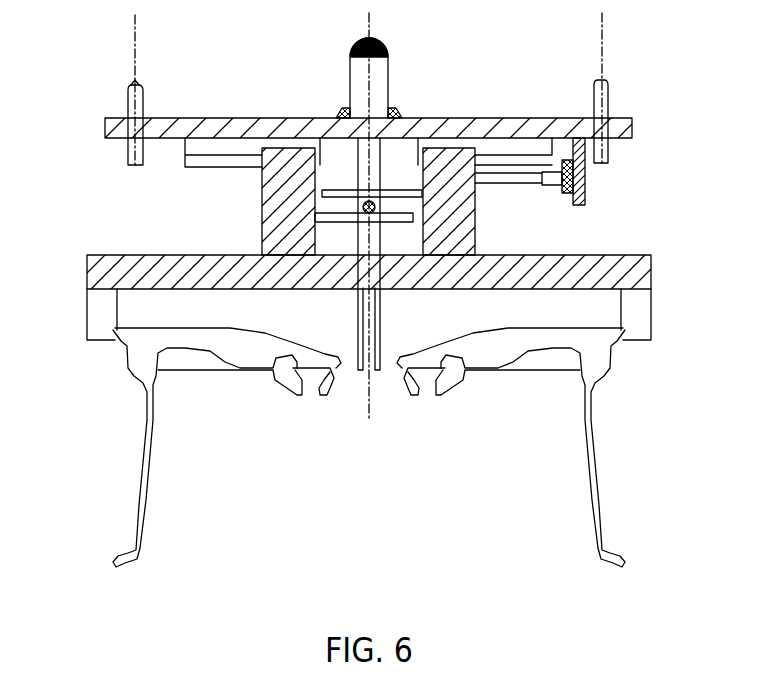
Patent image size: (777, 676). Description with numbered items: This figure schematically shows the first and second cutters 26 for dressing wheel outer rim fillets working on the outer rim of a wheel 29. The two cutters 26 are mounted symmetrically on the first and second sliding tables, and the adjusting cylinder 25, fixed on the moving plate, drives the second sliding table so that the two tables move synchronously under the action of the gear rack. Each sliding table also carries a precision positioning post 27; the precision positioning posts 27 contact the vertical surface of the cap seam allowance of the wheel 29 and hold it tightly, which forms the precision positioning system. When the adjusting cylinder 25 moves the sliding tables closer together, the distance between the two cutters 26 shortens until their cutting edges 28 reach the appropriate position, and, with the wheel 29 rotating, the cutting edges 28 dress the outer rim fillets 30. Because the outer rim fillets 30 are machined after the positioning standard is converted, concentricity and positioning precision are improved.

The adjusting cylinder 25 is at (582, 173).
The first/second cutter for dressing wheel outer rim fillets 26 is at (105, 303).
The precision positioning post 27 is at (376, 348).
The cutting edge 28 is at (117, 330).
The wheel 29 is at (140, 450).
The outer rim fillets 30 is at (110, 335).